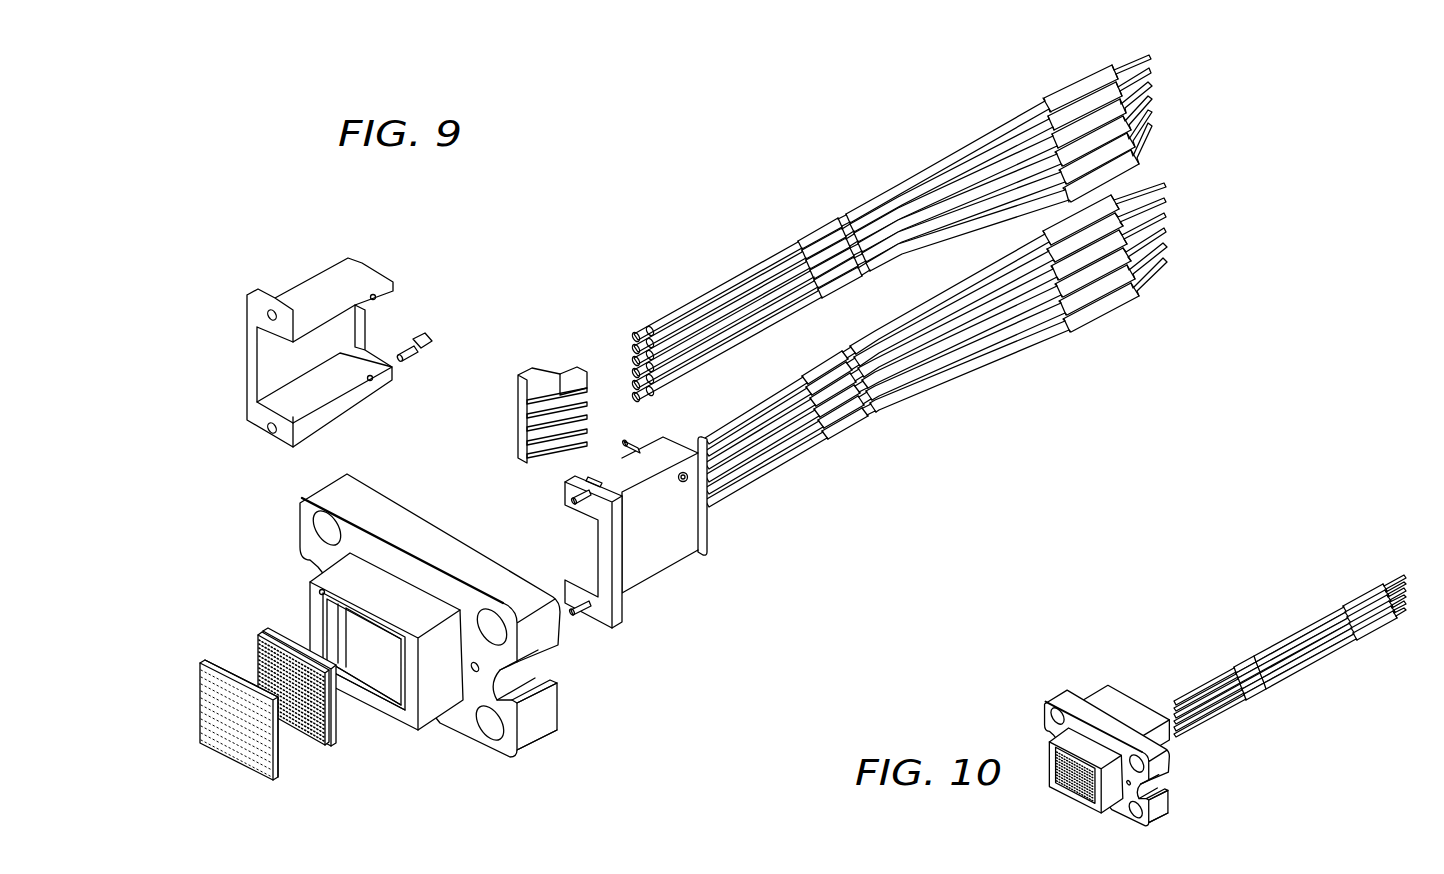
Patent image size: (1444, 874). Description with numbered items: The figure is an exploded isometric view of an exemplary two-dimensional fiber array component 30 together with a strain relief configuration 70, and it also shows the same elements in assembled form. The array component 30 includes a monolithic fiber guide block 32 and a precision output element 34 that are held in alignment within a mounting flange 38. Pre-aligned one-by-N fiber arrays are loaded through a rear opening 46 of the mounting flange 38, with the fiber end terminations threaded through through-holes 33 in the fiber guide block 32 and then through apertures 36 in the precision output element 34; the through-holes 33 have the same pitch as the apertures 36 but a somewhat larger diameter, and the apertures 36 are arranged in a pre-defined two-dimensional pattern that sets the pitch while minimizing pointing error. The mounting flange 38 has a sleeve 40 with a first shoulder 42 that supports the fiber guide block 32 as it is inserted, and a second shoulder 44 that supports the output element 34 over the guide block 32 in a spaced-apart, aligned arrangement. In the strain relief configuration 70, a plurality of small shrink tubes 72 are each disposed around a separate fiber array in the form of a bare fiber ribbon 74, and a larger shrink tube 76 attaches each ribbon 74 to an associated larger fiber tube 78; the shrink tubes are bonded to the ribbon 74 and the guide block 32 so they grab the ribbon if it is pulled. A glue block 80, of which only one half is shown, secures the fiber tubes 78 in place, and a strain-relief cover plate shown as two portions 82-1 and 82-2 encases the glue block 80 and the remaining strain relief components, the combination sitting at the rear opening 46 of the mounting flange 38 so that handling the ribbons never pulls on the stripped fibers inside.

In FIG. 9, the 2D fiber array component 30 is at (422, 520).
In FIG. 10, the 2D fiber array component 30 is at (1113, 695).
In FIG. 9, the monolithic fiber guide block 32 is at (338, 737).
In FIG. 9, the through-holes 33 is at (300, 734).
In FIG. 9, the precision output element 34 is at (198, 708).
In FIG. 9, the apertures 36 is at (213, 748).
In FIG. 9, the mounting flange 38 is at (548, 713).
In FIG. 9, the sleeve 40 is at (367, 664).
In FIG. 9, the first shoulder 42 is at (320, 592).
In FIG. 9, the second shoulder 44 is at (308, 636).
In FIG. 9, the rear opening 46 is at (398, 498).
In FIG. 9, the strain relief configuration 70 is at (917, 355).
In FIG. 10, the strain relief configuration 70 is at (1420, 659).
In FIG. 9, the small shrink tubes 72 is at (1053, 104).
In FIG. 9, the bare fiber ribbon 74 is at (927, 178).
In FIG. 9, the larger shrink tube 76 is at (817, 244).
In FIG. 9, the fiber tube 78 is at (736, 484).
In FIG. 9, the glue block 80 is at (524, 381).
In FIG. 9, the first portion of strain-relief cover plate 82-1 is at (268, 357).
In FIG. 9, the second portion of strain-relief cover plate 82-2 is at (646, 563).